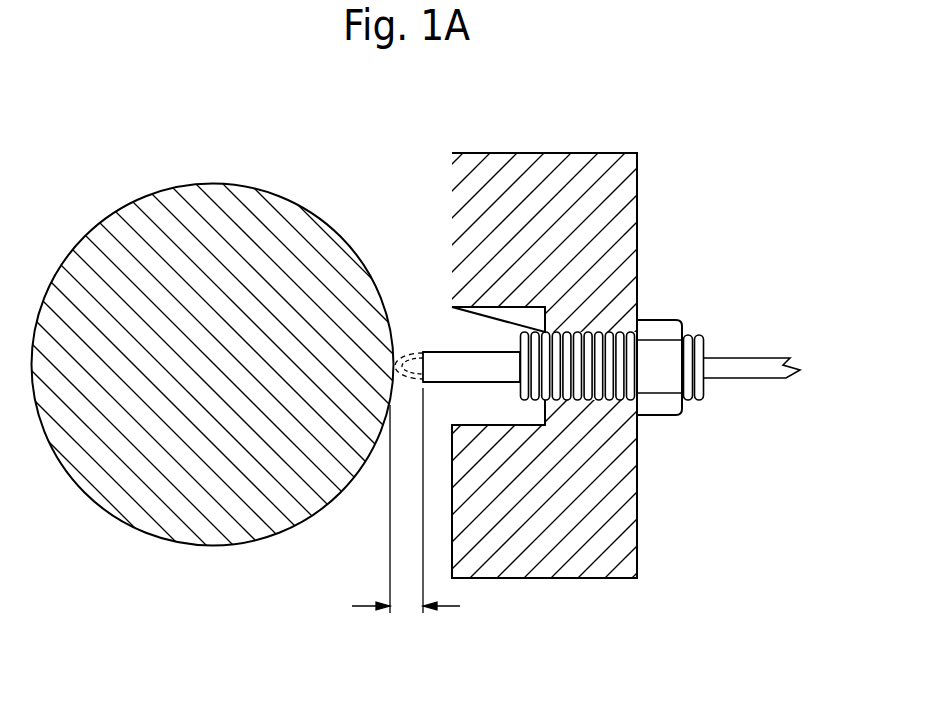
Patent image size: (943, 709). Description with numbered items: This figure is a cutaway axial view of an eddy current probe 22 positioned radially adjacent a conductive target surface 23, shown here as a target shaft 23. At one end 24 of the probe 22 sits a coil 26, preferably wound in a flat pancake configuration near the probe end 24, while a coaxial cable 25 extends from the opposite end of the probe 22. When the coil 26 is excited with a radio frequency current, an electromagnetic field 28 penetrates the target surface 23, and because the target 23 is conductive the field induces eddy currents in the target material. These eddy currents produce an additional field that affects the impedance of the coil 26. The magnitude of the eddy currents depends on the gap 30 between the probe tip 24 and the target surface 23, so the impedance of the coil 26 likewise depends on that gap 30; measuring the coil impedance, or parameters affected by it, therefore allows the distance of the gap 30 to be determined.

The eddy current probe 22 is at (660, 305).
The target surface 23 is at (198, 546).
The probe end 24 is at (450, 330).
The coaxial cable 25 is at (747, 378).
The coil 26 is at (443, 368).
The electromagnetic field 28 is at (412, 357).
The gap 30 is at (362, 606).